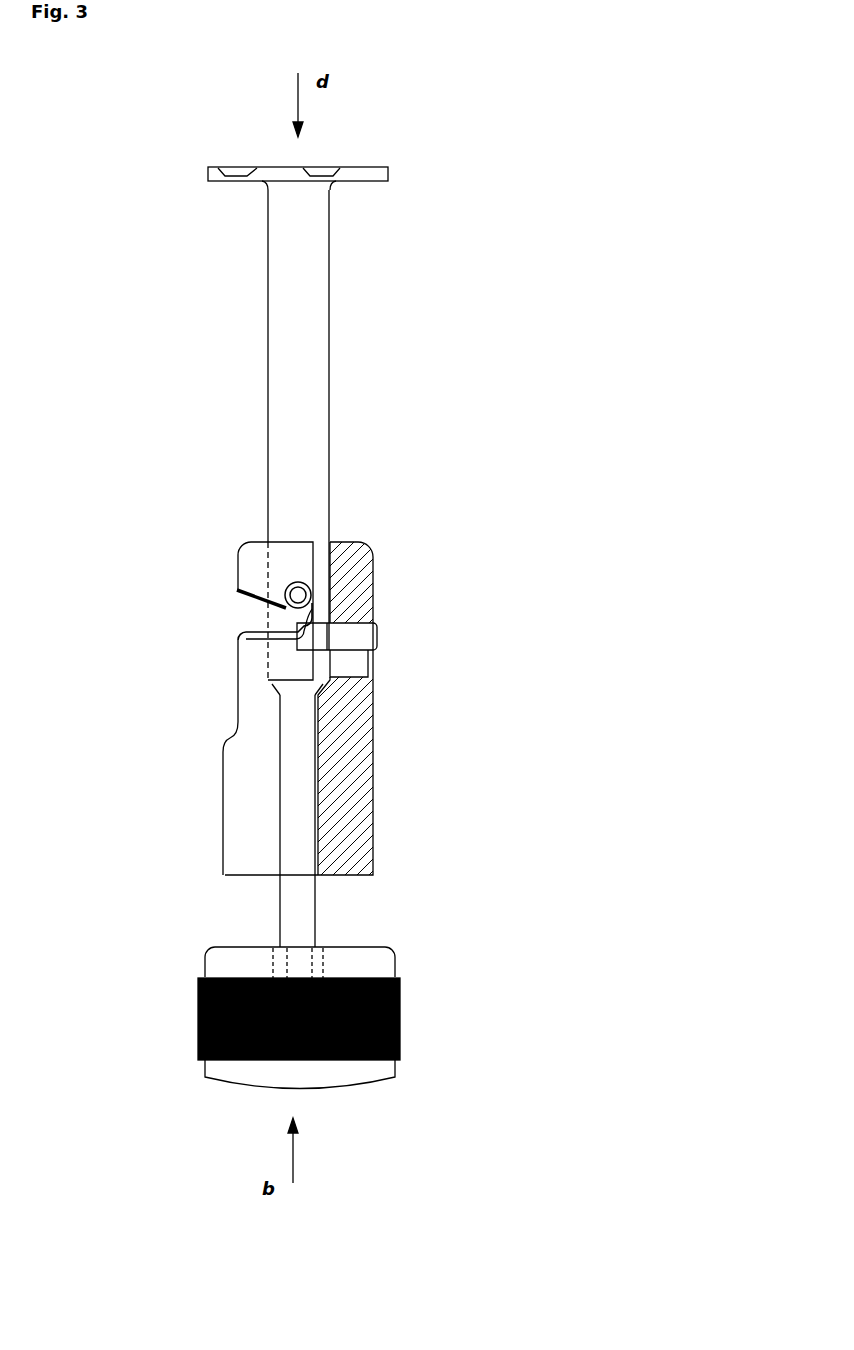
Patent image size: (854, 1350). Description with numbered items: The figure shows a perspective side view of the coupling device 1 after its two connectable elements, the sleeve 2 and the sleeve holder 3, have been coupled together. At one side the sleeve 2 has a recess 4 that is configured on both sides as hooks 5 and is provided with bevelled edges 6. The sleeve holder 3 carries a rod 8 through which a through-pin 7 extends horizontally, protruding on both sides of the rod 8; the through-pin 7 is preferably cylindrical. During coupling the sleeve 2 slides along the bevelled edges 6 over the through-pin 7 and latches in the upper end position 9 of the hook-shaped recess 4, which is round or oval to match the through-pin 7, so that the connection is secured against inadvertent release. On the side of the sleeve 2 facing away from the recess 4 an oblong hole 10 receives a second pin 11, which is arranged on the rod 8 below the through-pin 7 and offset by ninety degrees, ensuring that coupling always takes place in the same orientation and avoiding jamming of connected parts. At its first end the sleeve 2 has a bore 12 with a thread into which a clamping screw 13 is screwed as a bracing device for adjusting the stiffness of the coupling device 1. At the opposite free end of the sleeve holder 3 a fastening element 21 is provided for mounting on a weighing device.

The coupling device 1 is at (710, 311).
The sleeve 2 is at (535, 800).
The sleeve holder 3 is at (145, 345).
The recess 4 is at (298, 616).
The hooks 5 is at (249, 566).
The bevelled edges 6 is at (240, 591).
The through-pin 7 is at (298, 616).
The rod 8 is at (292, 352).
The upper end position 9 is at (299, 580).
The oblong hole 10 is at (360, 658).
The second pin 11 is at (355, 638).
The bore 12 is at (277, 777).
The clamping screw 13 is at (398, 1012).
The fastening element 21 is at (385, 178).